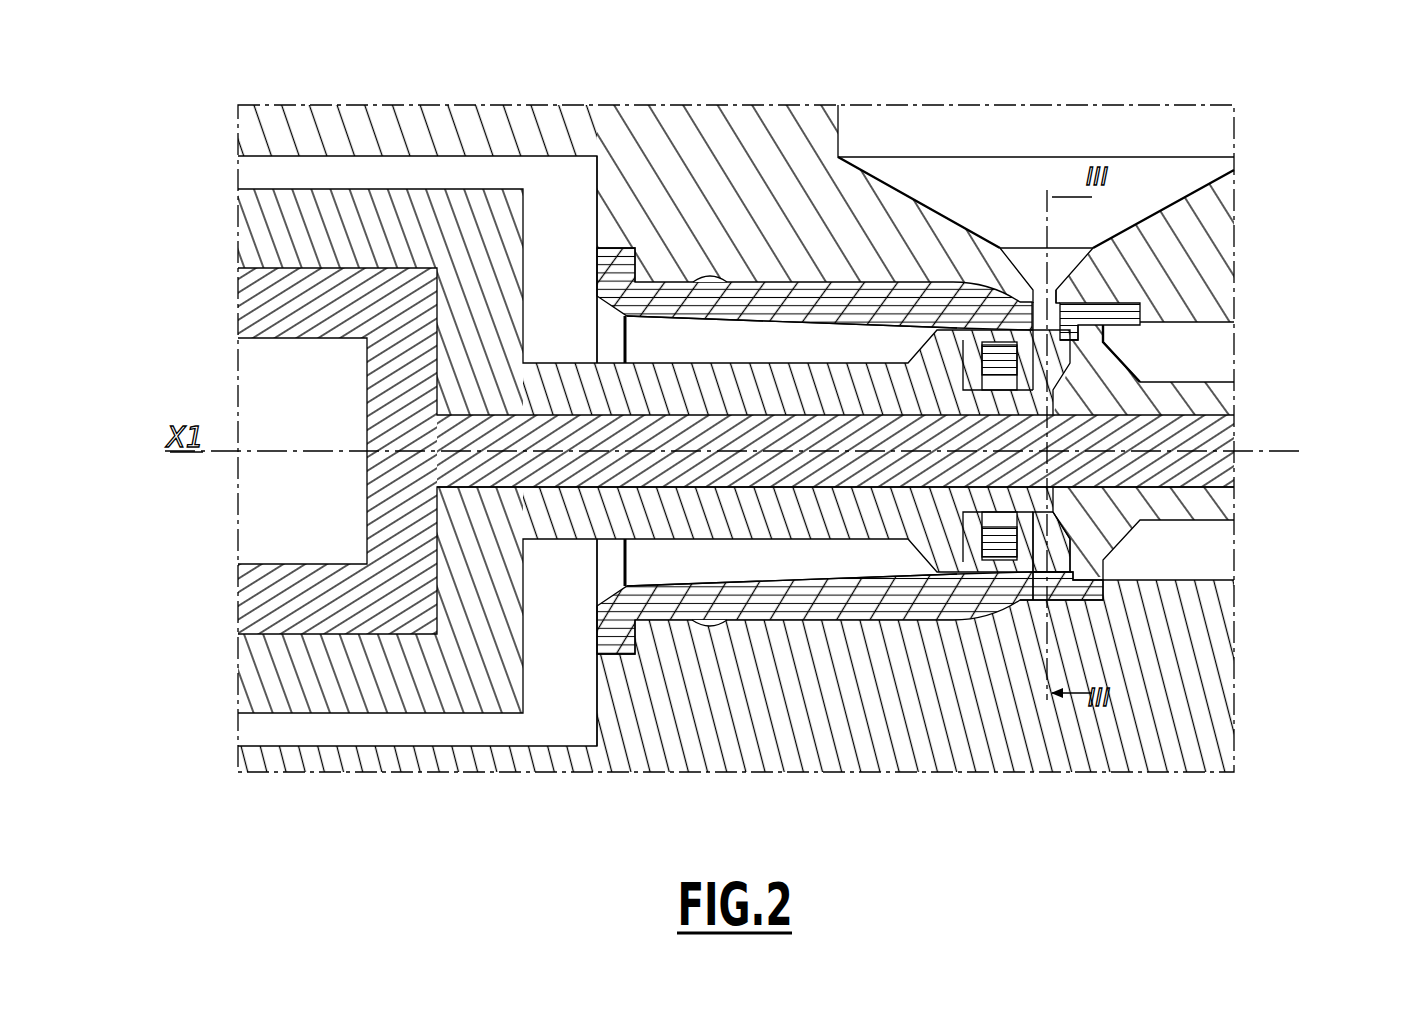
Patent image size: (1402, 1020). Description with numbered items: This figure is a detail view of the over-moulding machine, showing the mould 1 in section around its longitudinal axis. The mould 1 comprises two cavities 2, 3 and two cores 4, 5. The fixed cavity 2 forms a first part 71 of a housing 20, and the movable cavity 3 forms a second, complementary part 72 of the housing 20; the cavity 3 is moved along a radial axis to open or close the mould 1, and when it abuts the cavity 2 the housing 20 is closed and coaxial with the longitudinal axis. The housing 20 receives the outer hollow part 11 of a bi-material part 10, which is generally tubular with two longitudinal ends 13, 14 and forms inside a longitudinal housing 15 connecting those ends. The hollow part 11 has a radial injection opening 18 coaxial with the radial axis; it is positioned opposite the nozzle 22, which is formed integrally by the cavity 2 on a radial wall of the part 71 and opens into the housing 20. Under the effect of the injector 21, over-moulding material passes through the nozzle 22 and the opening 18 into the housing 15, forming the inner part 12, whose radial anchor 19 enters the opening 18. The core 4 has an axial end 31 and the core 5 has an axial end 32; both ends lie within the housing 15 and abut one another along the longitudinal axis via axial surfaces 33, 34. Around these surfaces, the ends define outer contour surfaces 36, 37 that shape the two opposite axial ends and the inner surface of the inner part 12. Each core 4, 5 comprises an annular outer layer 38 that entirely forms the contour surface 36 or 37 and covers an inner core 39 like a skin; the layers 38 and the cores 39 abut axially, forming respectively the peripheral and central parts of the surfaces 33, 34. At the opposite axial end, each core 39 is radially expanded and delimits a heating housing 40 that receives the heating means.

The mould 1 is at (365, 128).
The cavity 2 is at (632, 140).
The cavity 3 is at (683, 720).
The core 4 is at (478, 655).
The core 5 is at (1212, 508).
The bi-material part 10 is at (906, 602).
The outer hollow part 11 is at (805, 300).
The inner part 12 is at (1035, 582).
The longitudinal end 13 is at (605, 335).
The longitudinal end 14 is at (1145, 332).
The longitudinal housing 15 is at (780, 352).
The radial injection opening 18 is at (1050, 318).
The radial anchor 19 is at (1075, 301).
The housing 20 is at (893, 292).
The injector 21 is at (1132, 128).
The nozzle 22 is at (1066, 272).
The axial end 31 is at (1022, 566).
The axial end 32 is at (1152, 528).
The axial surface 33 is at (1082, 331).
The axial surface 34 is at (1012, 458).
The outer contour surface 36 is at (1001, 535).
The outer contour surface 37 is at (1057, 537).
The outer layer 38 is at (935, 355).
The core 39 is at (1215, 440).
The heating housing 40 is at (290, 560).
The first part 71 is at (672, 308).
The second part 72 is at (802, 562).